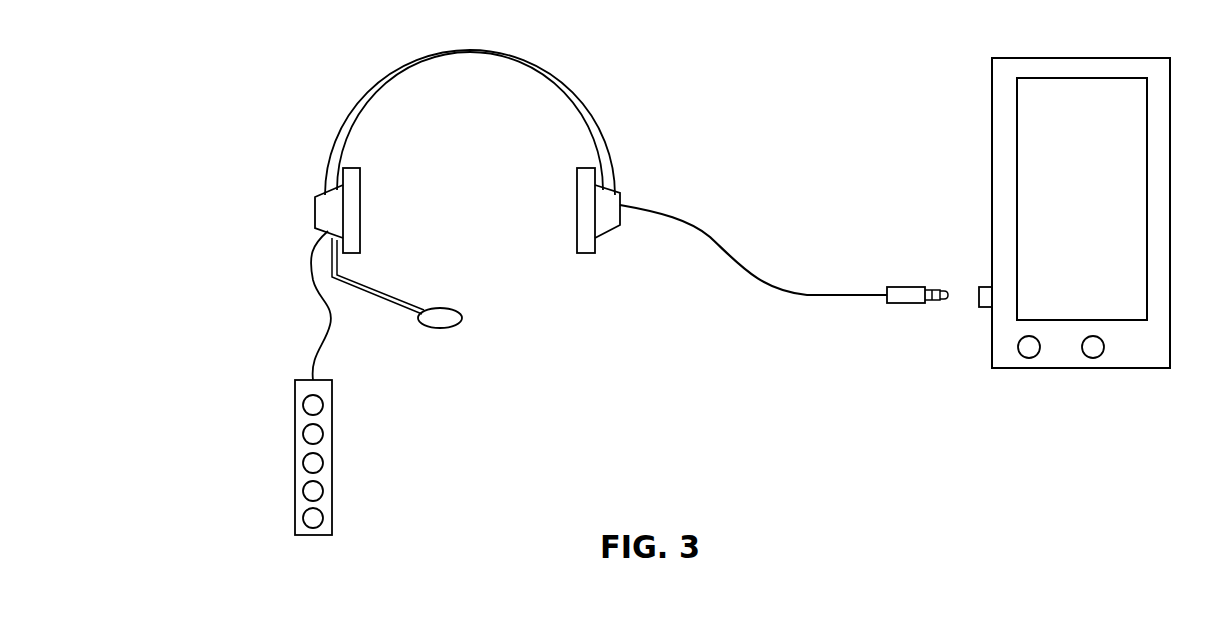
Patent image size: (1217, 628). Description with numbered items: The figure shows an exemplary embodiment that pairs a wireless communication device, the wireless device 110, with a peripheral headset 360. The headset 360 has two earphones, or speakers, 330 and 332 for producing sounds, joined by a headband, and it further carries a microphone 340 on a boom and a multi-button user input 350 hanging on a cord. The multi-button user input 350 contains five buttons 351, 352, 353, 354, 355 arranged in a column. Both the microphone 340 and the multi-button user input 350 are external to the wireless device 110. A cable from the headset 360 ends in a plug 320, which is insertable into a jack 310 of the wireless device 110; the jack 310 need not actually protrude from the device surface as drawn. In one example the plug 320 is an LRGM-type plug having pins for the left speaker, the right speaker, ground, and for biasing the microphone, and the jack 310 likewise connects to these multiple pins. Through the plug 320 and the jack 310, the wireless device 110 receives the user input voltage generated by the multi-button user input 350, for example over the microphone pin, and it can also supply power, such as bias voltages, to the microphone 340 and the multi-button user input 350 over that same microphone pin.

The wireless device 110 is at (1103, 57).
The jack 310 is at (990, 308).
The plug 320 is at (908, 285).
The earphone 330 is at (352, 168).
The earphone 332 is at (585, 168).
The microphone 340 is at (448, 328).
The multi-button user input 350 is at (295, 395).
The button 351 is at (320, 396).
The button 352 is at (320, 426).
The button 353 is at (320, 455).
The button 354 is at (320, 483).
The button 355 is at (323, 515).
The headset 360 is at (455, 43).